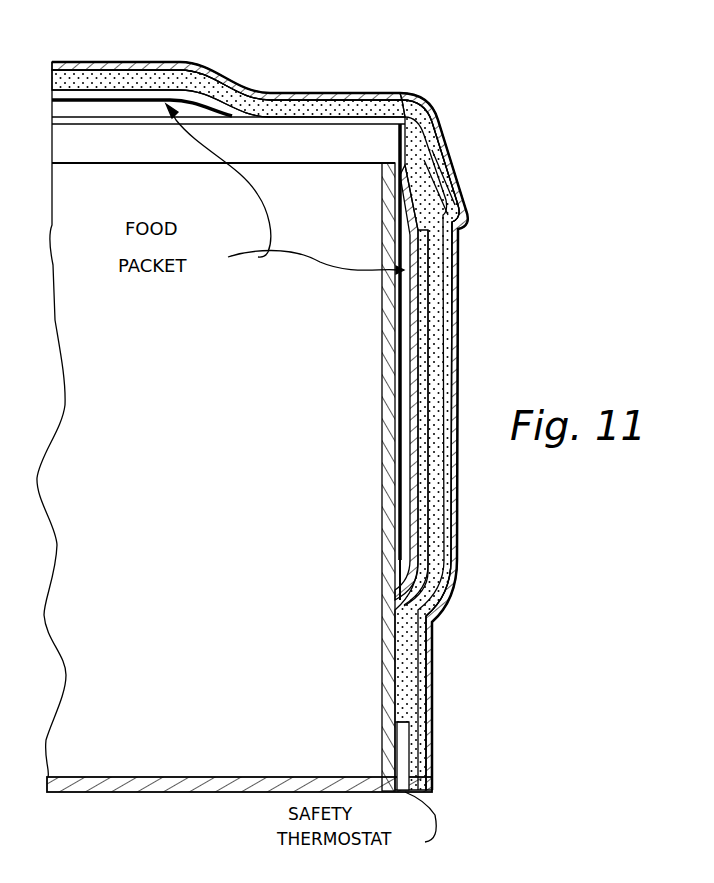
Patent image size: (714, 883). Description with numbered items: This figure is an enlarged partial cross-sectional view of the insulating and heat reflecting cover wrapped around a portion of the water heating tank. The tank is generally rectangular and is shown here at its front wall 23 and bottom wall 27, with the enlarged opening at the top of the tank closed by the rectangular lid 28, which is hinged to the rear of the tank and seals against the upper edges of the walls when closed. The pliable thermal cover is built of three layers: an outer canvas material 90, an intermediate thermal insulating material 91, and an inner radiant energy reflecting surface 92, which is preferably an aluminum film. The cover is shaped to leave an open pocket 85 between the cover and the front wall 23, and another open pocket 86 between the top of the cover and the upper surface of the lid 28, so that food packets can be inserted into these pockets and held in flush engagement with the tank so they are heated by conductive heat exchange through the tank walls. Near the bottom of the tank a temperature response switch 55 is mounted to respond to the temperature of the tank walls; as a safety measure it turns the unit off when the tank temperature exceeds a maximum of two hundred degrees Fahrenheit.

The front wall 23 is at (382, 566).
The bottom wall 27 is at (192, 777).
The lid 28 is at (108, 128).
The temperature response switch 55 is at (437, 755).
The open pockets 85 is at (410, 533).
The open pocket 86 is at (210, 96).
The outer canvas material 90 is at (355, 45).
The intermediate thermal insulating material 91 is at (420, 418).
The inner radiant energy reflecting surface 92 is at (272, 120).